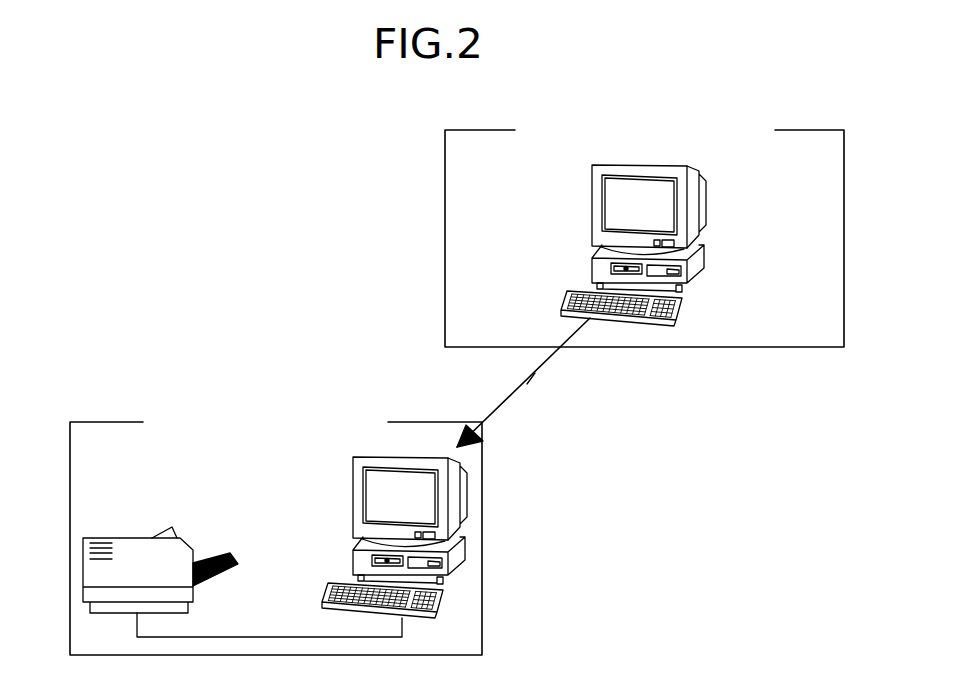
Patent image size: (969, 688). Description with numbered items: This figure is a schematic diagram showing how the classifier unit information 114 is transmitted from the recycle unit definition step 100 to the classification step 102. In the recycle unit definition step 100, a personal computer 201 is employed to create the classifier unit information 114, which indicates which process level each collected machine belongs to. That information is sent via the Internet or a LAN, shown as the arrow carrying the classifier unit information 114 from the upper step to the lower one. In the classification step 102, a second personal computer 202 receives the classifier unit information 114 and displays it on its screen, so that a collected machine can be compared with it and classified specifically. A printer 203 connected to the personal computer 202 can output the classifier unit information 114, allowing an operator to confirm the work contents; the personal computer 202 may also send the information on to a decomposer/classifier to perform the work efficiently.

The recycle unit definition step 100 is at (830, 110).
The personal computer 201 is at (707, 198).
The classifier unit information 114 is at (528, 385).
The classification step 102 is at (409, 422).
The personal computer 202 is at (470, 471).
The printer 203 is at (83, 547).